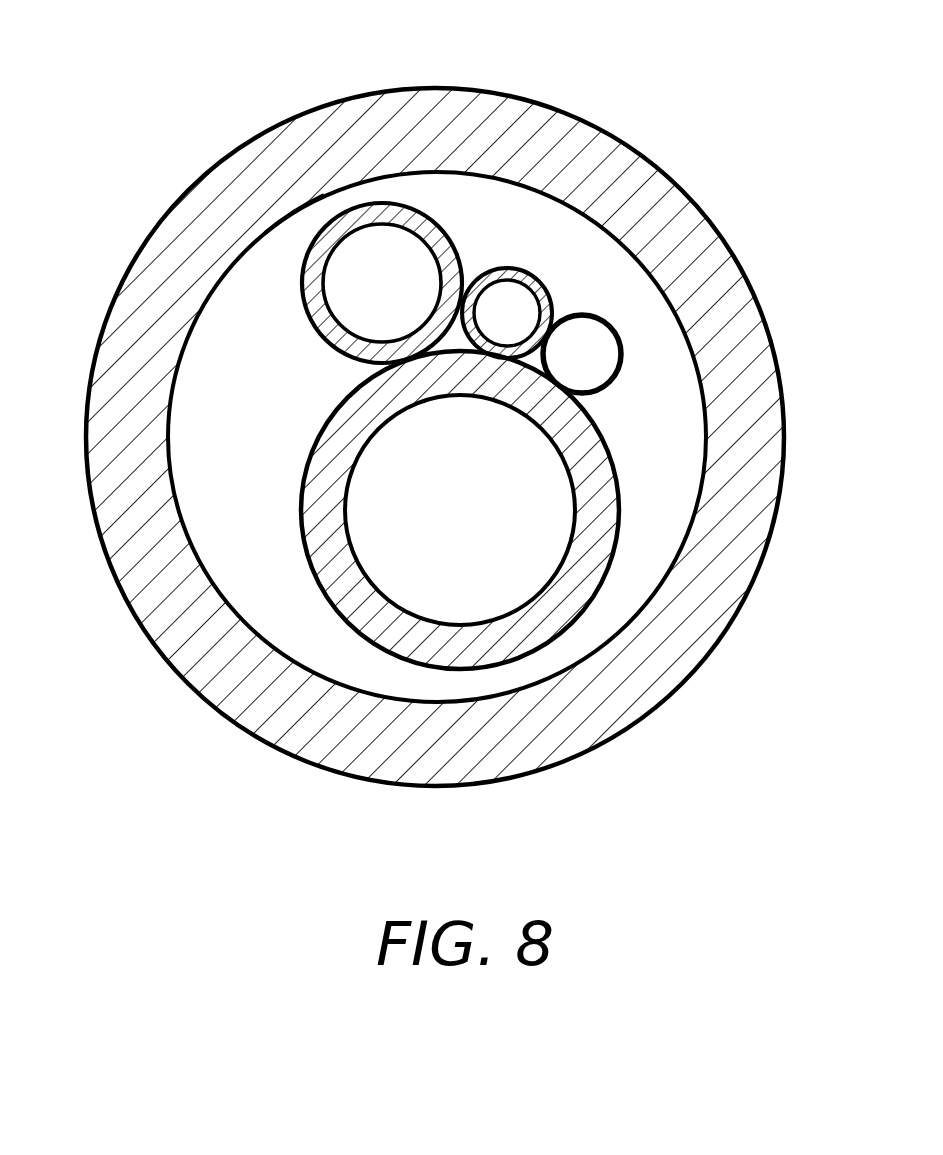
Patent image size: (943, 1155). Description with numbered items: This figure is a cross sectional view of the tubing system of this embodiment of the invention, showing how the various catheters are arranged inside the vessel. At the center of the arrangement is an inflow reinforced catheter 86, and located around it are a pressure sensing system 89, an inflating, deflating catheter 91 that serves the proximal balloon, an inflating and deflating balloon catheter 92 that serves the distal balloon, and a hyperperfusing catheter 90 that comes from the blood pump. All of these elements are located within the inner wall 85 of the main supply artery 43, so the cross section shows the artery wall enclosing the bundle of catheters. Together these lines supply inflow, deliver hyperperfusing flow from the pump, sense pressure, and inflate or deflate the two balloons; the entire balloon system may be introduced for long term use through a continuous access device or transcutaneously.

The main supply artery 43 is at (197, 213).
The inner wall 85 is at (285, 214).
The inflow reinforced catheter 86 is at (336, 577).
The pressure sensing system 89 is at (505, 302).
The hyperperfusing catheter 90 is at (373, 260).
The inflating, deflating catheter 91 is at (689, 260).
The inflating and deflating balloon catheter 92 is at (598, 338).